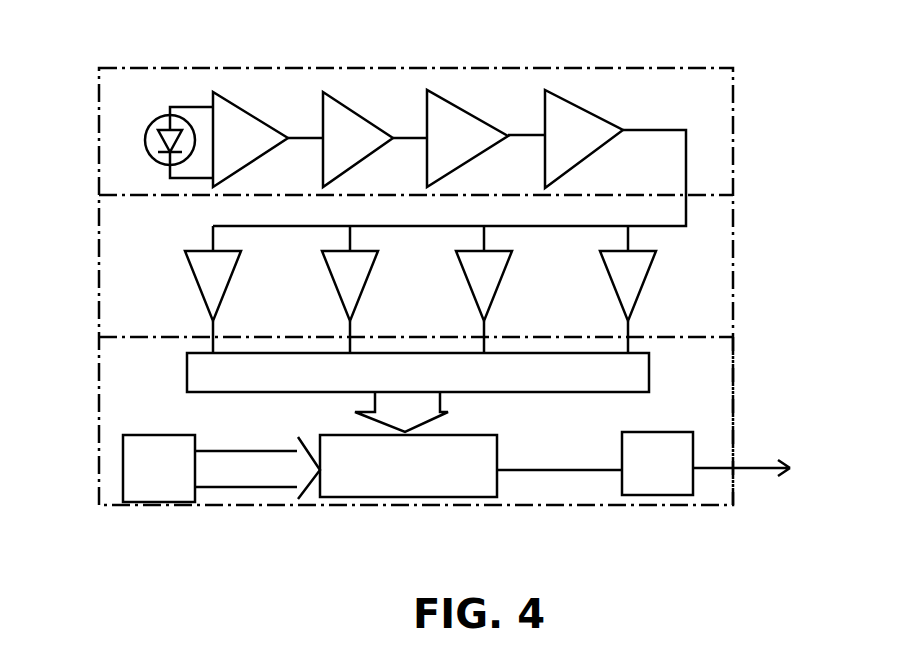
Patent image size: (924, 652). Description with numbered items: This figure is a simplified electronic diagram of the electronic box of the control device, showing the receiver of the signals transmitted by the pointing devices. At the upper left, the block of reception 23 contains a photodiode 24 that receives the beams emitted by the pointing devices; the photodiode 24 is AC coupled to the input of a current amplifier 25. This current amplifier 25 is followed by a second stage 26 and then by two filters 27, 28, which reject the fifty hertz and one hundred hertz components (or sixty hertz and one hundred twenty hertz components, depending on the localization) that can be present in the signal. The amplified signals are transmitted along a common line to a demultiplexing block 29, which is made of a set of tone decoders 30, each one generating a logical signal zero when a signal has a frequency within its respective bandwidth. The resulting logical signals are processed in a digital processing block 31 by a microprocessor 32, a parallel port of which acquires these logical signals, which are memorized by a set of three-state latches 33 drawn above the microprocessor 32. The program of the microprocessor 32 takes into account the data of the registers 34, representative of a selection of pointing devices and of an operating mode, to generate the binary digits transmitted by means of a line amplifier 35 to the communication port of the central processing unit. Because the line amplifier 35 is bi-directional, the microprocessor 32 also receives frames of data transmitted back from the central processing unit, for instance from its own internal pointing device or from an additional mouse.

The block of reception 23 is at (697, 104).
The photodiode 24 is at (152, 138).
The current amplifier 25 is at (243, 132).
The second stage 26 is at (343, 128).
The filter 27 is at (448, 135).
The filter 28 is at (573, 132).
The demultiplexing block 29 is at (708, 231).
The tone decoder 30 is at (195, 256).
The digital processing block 31 is at (718, 483).
The microprocessor 32 is at (355, 468).
The set of 3-state latches 33 is at (630, 375).
The registers 34 is at (157, 478).
The line amplifier 35 is at (640, 473).